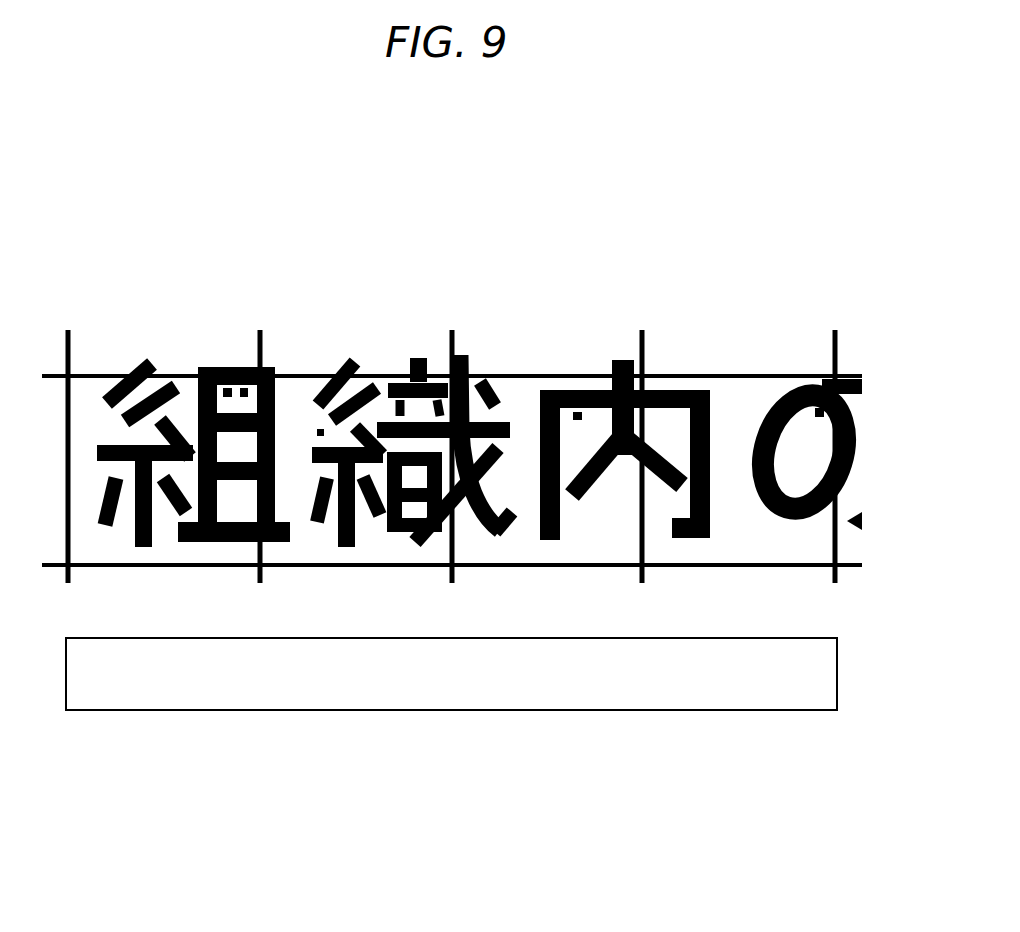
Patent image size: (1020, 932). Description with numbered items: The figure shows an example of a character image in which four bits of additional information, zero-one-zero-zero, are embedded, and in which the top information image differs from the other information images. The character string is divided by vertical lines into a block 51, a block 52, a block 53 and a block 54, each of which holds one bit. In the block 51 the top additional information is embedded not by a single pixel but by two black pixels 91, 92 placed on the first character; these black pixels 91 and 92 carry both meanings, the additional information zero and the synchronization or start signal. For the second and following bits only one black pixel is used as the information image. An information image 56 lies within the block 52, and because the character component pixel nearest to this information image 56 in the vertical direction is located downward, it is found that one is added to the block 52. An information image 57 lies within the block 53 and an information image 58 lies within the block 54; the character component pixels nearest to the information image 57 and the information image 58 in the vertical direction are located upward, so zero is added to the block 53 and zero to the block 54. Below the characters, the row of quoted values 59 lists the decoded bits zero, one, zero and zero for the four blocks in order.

The block 51 is at (87, 374).
The block 52 is at (305, 373).
The block 53 is at (522, 373).
The block 54 is at (747, 369).
The information image 56 is at (322, 428).
The information image 57 is at (580, 390).
The information image 58 is at (822, 378).
The detection result table 59 is at (242, 712).
The black pixel 91 is at (227, 389).
The black pixel 92 is at (244, 389).